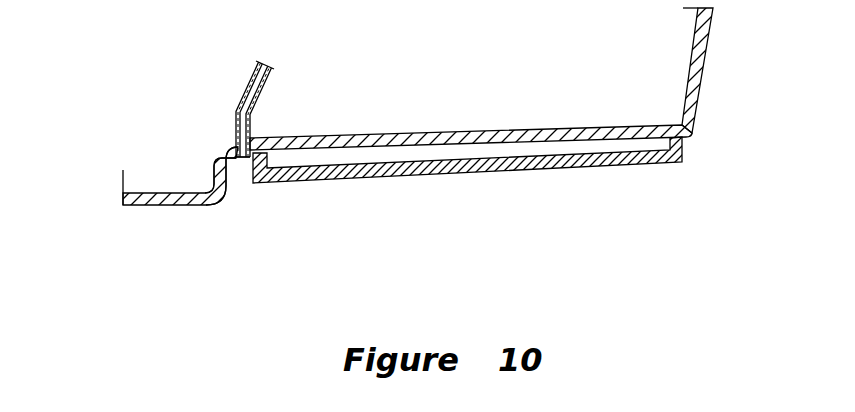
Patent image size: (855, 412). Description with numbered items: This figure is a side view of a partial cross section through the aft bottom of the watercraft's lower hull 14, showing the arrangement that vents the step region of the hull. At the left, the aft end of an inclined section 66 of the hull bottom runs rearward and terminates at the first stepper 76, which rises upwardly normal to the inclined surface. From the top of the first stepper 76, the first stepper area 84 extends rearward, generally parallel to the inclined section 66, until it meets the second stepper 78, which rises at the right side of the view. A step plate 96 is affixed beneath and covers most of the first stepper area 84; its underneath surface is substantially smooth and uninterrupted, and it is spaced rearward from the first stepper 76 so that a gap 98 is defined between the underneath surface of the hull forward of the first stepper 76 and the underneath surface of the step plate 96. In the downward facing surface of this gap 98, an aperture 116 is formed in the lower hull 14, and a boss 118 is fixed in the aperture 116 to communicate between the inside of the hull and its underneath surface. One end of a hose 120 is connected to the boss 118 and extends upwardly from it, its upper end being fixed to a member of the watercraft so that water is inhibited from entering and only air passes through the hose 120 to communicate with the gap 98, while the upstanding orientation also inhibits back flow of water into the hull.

The lower hull portion 14 is at (121, 223).
The inclined section 66 is at (171, 207).
The first stepper 76 is at (225, 164).
The second stepper 78 is at (702, 89).
The first stepper area 84 is at (406, 150).
The step plate 96 is at (582, 169).
The gap 98 is at (240, 161).
The aperture 116 is at (248, 160).
The boss 118 is at (234, 140).
The hose 120 is at (247, 83).